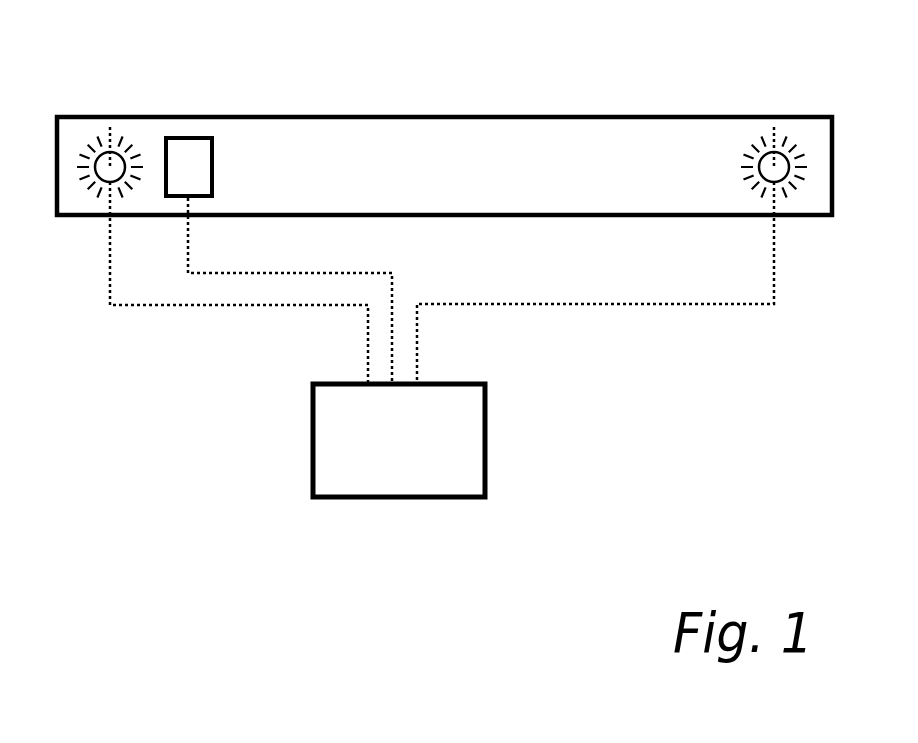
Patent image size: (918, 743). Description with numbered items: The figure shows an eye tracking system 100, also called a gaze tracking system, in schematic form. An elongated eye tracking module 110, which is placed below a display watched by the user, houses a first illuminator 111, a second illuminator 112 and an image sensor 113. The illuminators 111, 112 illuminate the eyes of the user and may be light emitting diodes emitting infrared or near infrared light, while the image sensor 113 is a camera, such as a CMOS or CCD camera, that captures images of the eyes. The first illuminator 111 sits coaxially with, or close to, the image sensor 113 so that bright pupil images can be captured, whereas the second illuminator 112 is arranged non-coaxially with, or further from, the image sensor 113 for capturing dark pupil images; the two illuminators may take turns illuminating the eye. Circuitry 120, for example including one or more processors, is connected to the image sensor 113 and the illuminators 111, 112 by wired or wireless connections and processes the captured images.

The eye tracking system 100 is at (113, 466).
The eye tracking module 110 is at (378, 116).
The first illuminator 111 is at (103, 130).
The second illuminator 112 is at (771, 145).
The image sensor 113 is at (178, 150).
The circuitry 120 is at (378, 478).